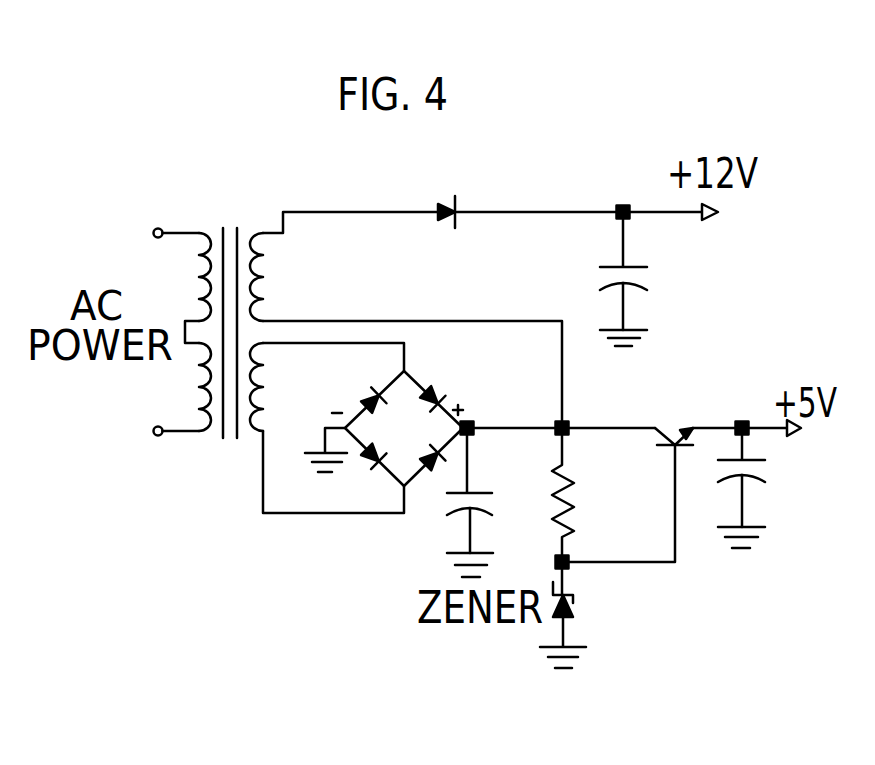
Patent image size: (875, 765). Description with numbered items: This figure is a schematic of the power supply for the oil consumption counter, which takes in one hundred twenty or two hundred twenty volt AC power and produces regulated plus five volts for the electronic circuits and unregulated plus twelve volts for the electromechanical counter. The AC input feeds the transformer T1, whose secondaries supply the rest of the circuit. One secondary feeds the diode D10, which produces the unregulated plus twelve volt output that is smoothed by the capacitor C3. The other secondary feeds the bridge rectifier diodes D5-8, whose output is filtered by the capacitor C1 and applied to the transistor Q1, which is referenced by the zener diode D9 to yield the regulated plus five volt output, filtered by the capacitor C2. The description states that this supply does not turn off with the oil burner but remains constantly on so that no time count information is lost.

The transformer T1 is at (209, 310).
The diode D10 is at (453, 188).
The capacitor C3 is at (653, 282).
The bridge rectifier diodes D5-8 is at (365, 462).
The capacitor C1 is at (492, 505).
The zener diode D9 is at (591, 618).
The transistor Q1 is at (670, 412).
The capacitor C2 is at (766, 491).